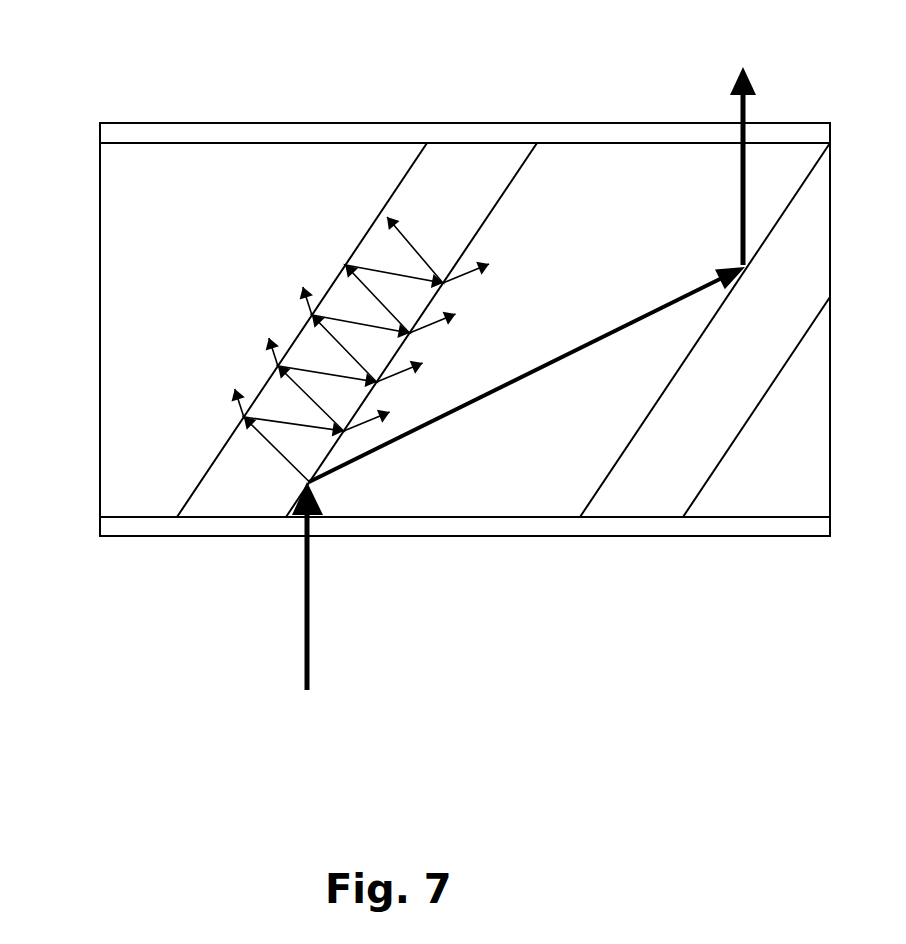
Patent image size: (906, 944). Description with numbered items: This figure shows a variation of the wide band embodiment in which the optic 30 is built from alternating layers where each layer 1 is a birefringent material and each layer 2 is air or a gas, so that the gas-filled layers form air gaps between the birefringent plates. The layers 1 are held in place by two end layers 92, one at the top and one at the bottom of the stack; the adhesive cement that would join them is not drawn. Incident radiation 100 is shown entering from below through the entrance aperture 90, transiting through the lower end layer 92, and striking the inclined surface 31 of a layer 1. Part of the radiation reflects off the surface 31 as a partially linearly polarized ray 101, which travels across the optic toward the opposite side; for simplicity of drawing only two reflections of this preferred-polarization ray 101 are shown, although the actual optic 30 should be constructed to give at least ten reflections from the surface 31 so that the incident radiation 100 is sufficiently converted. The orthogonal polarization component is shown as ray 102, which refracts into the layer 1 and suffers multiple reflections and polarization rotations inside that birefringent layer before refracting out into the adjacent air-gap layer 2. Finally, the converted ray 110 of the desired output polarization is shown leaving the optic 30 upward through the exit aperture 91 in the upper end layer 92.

The optic 30 is at (85, 338).
The surface 31 is at (326, 267).
The entrance aperture 90 is at (437, 556).
The exit aperture 91 is at (432, 100).
The end layer 92 is at (185, 135).
The layer 1 is at (221, 492).
The layer 2 is at (160, 502).
The incident radiation 100 is at (305, 655).
The partially linear polarized ray 101 is at (395, 440).
The orthogonal component 102 is at (265, 437).
The ray 110 is at (743, 108).